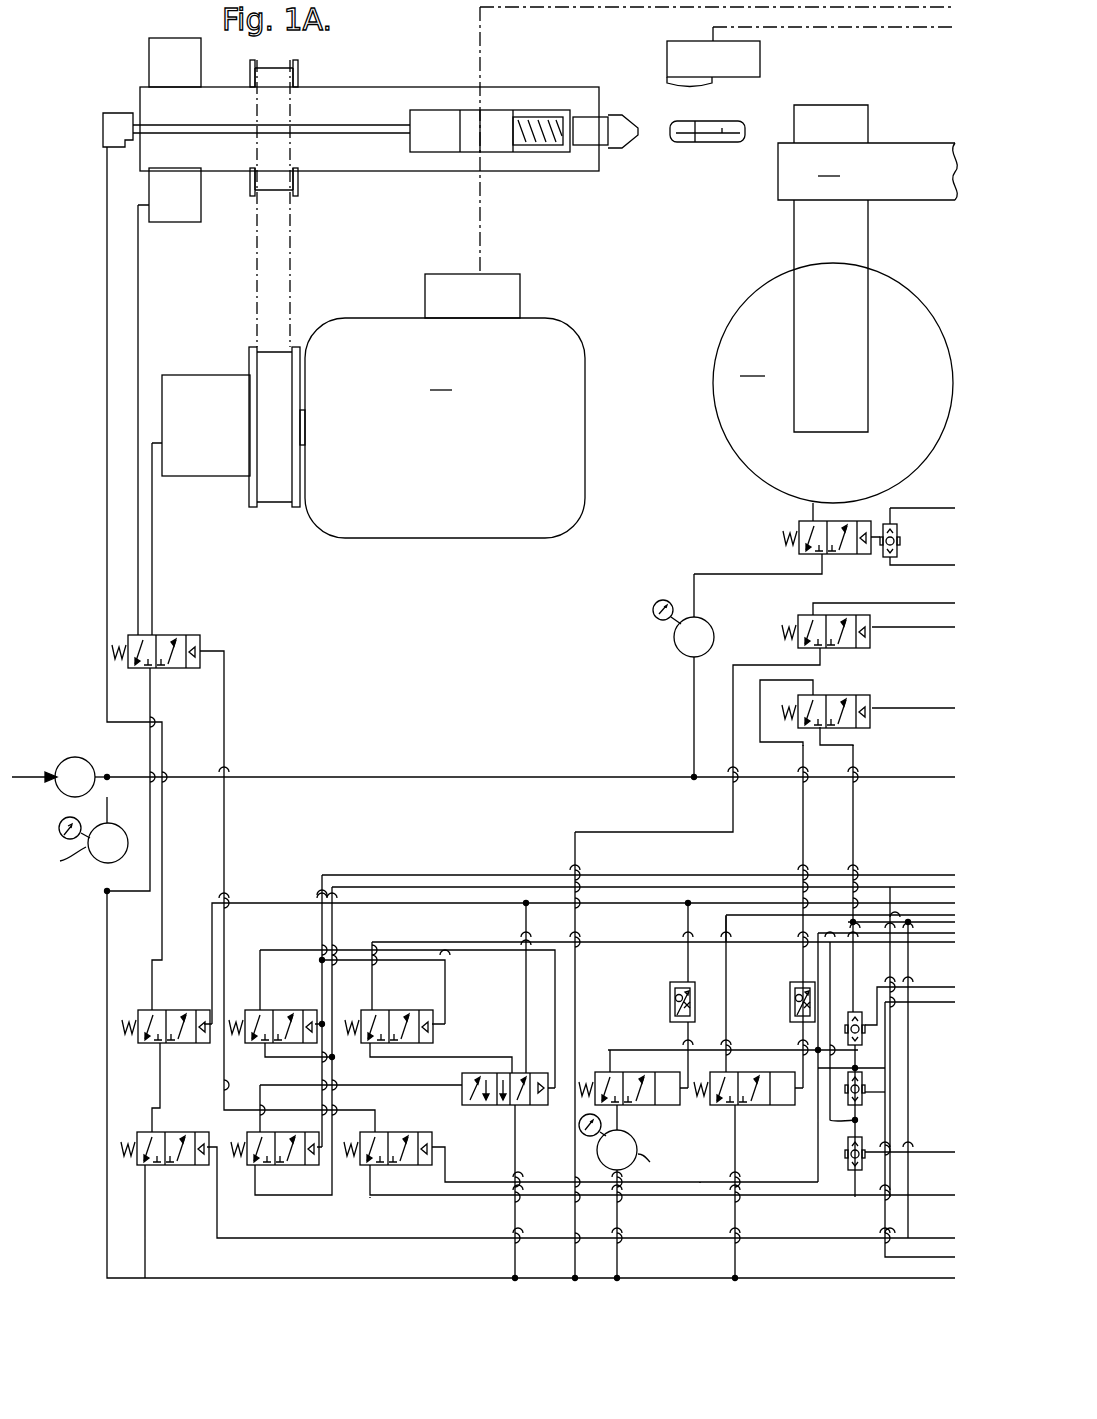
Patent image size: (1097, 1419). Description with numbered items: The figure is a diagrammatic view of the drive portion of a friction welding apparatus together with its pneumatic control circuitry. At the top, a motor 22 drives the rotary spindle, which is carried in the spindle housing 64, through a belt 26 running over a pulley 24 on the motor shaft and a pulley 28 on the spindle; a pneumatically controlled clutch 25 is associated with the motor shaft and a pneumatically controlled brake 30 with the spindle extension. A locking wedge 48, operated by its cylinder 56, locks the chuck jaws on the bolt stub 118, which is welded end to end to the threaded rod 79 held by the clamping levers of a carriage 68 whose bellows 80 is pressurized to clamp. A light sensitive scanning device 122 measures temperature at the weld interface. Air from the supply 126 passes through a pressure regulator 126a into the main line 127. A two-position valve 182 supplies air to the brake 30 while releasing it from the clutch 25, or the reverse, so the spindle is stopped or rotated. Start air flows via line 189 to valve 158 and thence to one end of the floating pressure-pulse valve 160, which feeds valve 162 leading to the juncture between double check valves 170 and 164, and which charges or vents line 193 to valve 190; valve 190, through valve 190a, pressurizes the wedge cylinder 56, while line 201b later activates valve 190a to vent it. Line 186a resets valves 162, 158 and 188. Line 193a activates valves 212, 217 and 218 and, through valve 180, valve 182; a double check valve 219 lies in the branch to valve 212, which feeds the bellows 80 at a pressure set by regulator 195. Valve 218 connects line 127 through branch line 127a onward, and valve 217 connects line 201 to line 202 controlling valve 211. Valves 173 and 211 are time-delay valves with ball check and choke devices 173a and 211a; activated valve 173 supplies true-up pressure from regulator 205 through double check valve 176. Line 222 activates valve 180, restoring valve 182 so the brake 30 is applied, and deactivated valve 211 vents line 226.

The motor 22 is at (445, 406).
The pulley 24 is at (294, 347).
The clutch 25 is at (218, 382).
The belt 26 is at (276, 302).
The pulley 28 is at (297, 62).
The brake 30 is at (149, 42).
The wedge member 48 is at (638, 130).
The cylinder 56 is at (426, 116).
The spindle housing 64 is at (360, 110).
The carriage 68 is at (867, 171).
The threaded rod 79 is at (722, 142).
The bellows 80 is at (833, 304).
The bolt stub 118 is at (688, 142).
The light sensitive device 122 is at (760, 60).
The air supply 126 is at (44, 757).
The pressure regulator 126a is at (98, 862).
The line 127 is at (99, 1120).
The branch line 127a is at (676, 832).
The two-position valve 158 is at (302, 1165).
The floating type two-position valve 160 is at (503, 1104).
The two-position valve 162 is at (394, 1010).
The double check valve 164 is at (846, 1158).
The double check valve 170 is at (848, 1111).
The valve 173 is at (648, 1104).
The ball check valve and choke device 173a is at (665, 1009).
The double check valve 176 is at (836, 1030).
The valve 180 is at (428, 1132).
The two-position valve 182 is at (174, 635).
The line 186a is at (512, 875).
The valve 188 is at (310, 1010).
The line 189 is at (352, 886).
The valve 190 is at (160, 1010).
The valve 190a is at (176, 1132).
The line 193 is at (464, 904).
The line 193a is at (692, 1198).
The regulator 195 is at (678, 656).
The line 201 is at (856, 828).
The line 201b is at (908, 1084).
The line 202 is at (803, 858).
The regulator 205 is at (596, 1157).
The valve 211 is at (782, 1102).
The ball check valve and choke device 211a is at (790, 1012).
The valve 212 is at (868, 554).
The valve 217 is at (872, 738).
The valve 218 is at (878, 668).
The double check valve 219 is at (903, 538).
The line 222 is at (796, 1182).
The line 226 is at (728, 992).